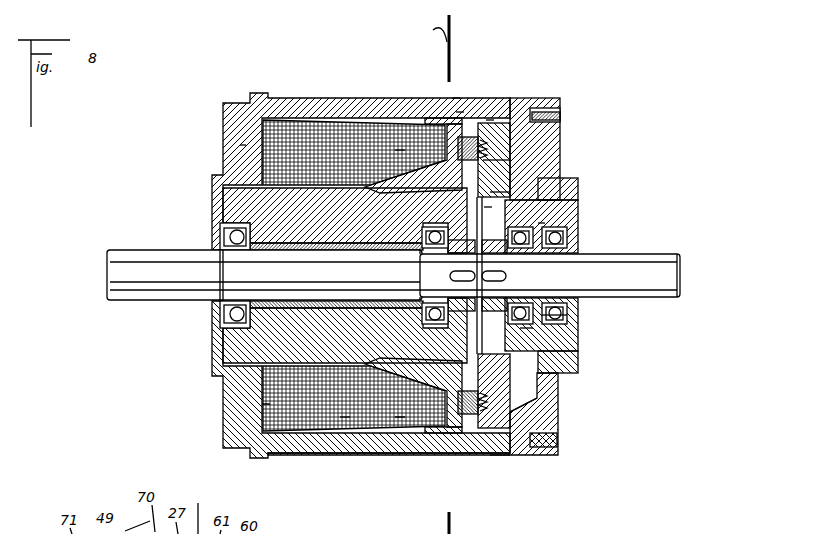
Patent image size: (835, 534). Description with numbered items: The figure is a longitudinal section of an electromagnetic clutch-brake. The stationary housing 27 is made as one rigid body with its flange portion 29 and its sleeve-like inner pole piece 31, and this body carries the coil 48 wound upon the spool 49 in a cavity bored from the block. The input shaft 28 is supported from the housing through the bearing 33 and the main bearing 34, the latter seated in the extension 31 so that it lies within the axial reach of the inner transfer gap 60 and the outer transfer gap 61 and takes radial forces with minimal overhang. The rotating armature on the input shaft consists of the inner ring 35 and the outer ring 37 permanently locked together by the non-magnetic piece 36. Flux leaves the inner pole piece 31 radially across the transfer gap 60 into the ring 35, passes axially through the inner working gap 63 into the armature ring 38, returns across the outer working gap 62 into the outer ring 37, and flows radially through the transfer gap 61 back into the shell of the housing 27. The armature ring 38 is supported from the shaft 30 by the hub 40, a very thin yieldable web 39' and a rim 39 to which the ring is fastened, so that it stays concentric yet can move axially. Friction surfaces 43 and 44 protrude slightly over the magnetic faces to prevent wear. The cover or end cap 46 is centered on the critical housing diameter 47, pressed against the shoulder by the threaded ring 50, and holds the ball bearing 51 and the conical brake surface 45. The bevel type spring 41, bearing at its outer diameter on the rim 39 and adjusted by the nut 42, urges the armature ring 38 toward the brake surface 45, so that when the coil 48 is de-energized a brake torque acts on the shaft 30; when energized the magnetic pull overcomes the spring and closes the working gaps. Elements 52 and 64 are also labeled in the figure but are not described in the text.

The housing 27 is at (325, 108).
The input shaft 28 is at (127, 257).
The flange portion 29 is at (240, 145).
The shaft 30 is at (665, 253).
The inner pole piece 31 is at (325, 222).
The bearing 33 is at (215, 350).
The main bearing 34 is at (445, 322).
The inner rotating part 35 is at (415, 186).
The non-magnetic piece 36 is at (445, 166).
The outer ring 37 is at (460, 112).
The armature ring 38 is at (520, 168).
The rim 39 is at (566, 164).
The web 39' is at (549, 183).
The hub 40 is at (505, 257).
The bevel type spring 41 is at (562, 196).
The adjustment nut 42 is at (540, 223).
The friction surface 43 is at (468, 148).
The friction surface 44 is at (495, 457).
The brake surface 45 is at (505, 432).
The end cap 46 is at (548, 390).
The housing diameter 47 is at (505, 457).
The coil 48 is at (480, 457).
The spool 49 is at (262, 404).
The threaded ring 50 is at (558, 440).
The ball bearing 51 is at (525, 333).
The bearing 52 is at (560, 326).
The inner transfer gap 60 is at (400, 152).
The outer transfer gap 61 is at (455, 100).
The outer working gap 62 is at (482, 130).
The inner working gap 63 is at (490, 122).
The recess 64 is at (512, 116).